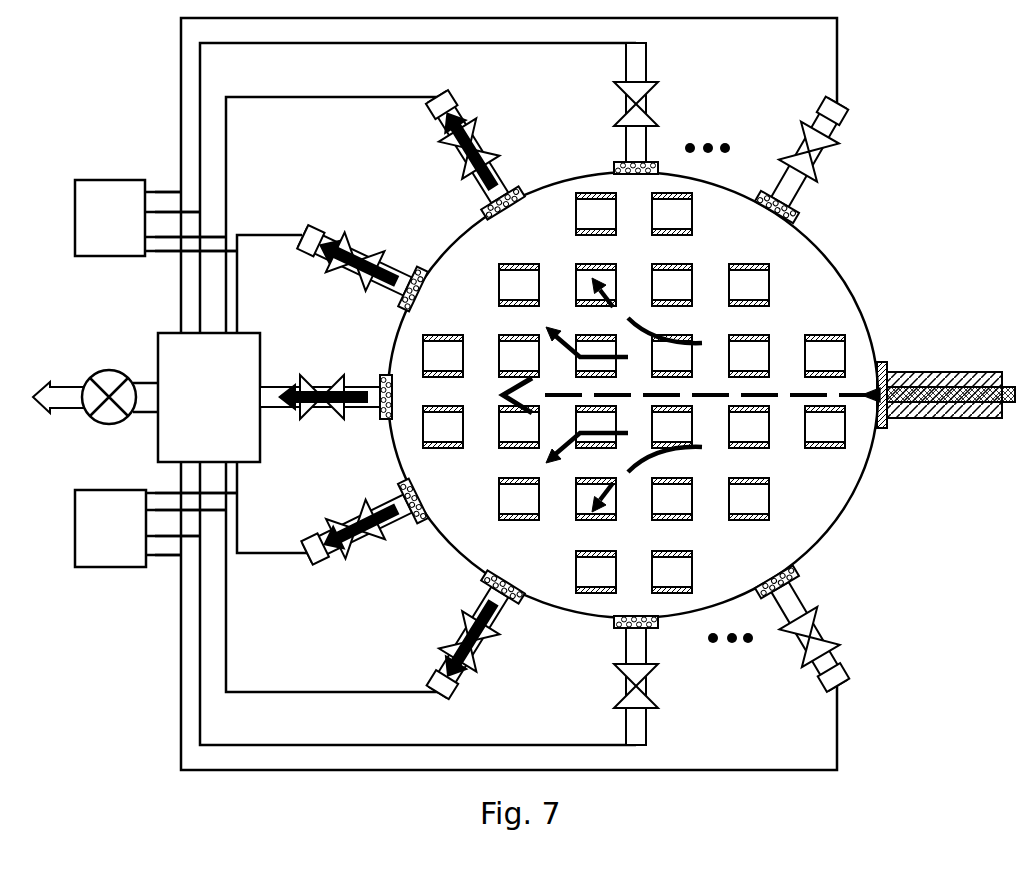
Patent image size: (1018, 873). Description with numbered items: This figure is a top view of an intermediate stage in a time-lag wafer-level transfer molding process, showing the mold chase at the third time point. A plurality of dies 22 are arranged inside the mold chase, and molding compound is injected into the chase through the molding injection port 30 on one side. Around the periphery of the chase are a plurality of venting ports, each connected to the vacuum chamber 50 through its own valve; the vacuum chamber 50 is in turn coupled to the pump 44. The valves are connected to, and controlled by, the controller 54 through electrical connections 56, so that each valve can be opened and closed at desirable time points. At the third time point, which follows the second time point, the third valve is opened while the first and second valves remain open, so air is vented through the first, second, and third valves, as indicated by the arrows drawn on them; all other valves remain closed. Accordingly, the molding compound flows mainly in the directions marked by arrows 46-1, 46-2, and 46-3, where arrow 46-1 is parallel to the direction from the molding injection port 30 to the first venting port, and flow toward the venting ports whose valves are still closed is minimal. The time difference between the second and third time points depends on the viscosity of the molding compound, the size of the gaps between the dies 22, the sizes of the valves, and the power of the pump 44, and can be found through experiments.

The dies 22 is at (634, 393).
The molding injection port 30 is at (884, 368).
The pump 44 is at (100, 428).
The arrow 46-1 is at (725, 392).
The arrow 46-2 is at (572, 448).
The arrow 46-3 is at (626, 318).
The vacuum chamber 50 is at (196, 408).
The controller 54 is at (97, 229).
The electrical connections 56 is at (172, 252).